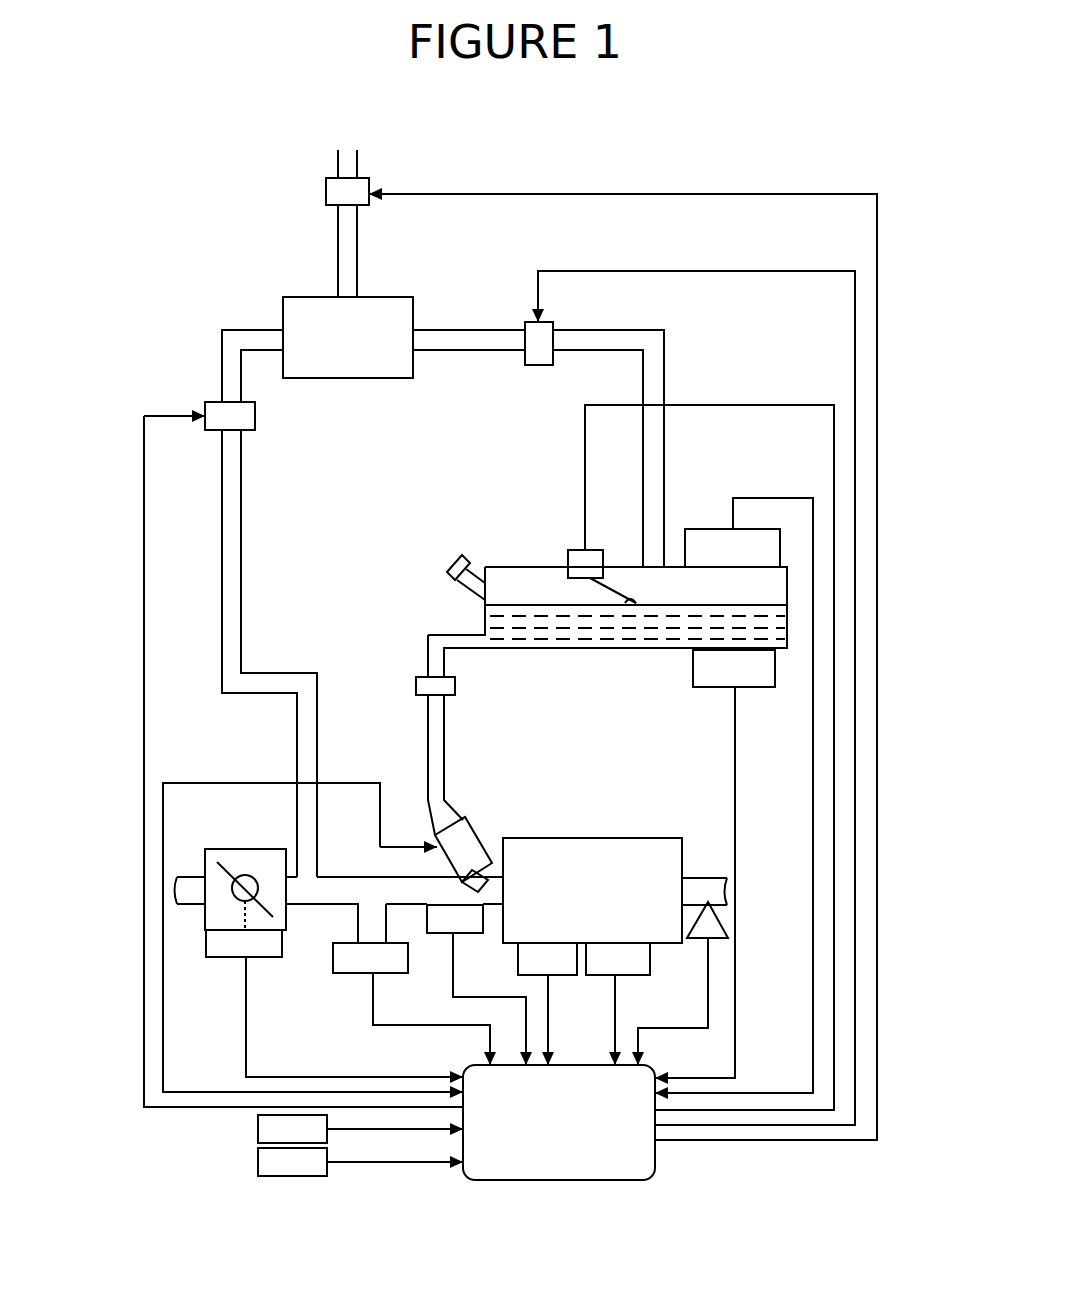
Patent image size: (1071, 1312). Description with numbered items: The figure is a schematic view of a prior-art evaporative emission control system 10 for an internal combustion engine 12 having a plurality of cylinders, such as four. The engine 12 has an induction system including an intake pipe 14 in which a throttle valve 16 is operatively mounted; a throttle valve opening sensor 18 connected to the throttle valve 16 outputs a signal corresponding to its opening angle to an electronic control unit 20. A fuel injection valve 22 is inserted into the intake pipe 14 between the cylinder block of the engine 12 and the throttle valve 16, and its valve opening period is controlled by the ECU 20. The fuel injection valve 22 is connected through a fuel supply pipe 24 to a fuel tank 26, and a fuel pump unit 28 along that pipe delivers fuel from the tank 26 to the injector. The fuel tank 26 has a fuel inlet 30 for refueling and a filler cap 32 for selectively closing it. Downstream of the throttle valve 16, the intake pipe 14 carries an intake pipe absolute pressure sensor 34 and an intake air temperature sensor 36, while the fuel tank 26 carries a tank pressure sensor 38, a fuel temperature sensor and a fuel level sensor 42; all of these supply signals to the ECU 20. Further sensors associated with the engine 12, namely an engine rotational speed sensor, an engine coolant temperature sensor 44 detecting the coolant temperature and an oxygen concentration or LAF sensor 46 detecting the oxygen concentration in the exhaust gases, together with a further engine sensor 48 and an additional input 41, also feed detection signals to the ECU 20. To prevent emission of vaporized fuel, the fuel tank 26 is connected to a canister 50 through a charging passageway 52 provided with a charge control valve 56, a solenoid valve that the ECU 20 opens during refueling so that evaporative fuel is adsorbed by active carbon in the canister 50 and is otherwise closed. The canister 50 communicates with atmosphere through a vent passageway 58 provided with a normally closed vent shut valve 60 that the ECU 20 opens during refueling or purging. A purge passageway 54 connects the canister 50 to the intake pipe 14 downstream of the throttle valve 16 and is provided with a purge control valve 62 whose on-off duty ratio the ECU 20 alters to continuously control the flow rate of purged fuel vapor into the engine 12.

The evaporative emission control system 10 is at (192, 282).
The internal combustion engine 12 is at (612, 838).
The intake pipe 14 is at (313, 906).
The throttle valve 16 is at (229, 868).
The throttle valve opening sensor 18 is at (232, 960).
The electronic control unit 20 is at (655, 1155).
The fuel injection valve 22 is at (482, 826).
The fuel supply pipe 24 is at (444, 765).
The fuel tank 26 is at (642, 650).
The fuel pump unit 28 is at (420, 698).
The fuel inlet 30 is at (477, 590).
The filler cap 32 is at (447, 578).
The intake pipe absolute pressure sensor 34 is at (352, 976).
The intake air temperature sensor 36 is at (470, 936).
The tank pressure sensor 38 is at (718, 529).
The battery voltage sensor 41 is at (258, 1156).
The fuel level sensor 42 is at (603, 560).
The engine coolant temperature sensor 44 is at (565, 978).
The oxygen concentration sensor 46 is at (622, 978).
The oxygen concentration sensor 48 is at (718, 926).
The canister 50 is at (393, 297).
The charging passageway 52 is at (664, 363).
The purge passageway 54 is at (222, 355).
The charge control valve 56 is at (525, 320).
The vent passageway 58 is at (338, 236).
The vent shut valve 60 is at (372, 170).
The purge control valve 62 is at (255, 415).